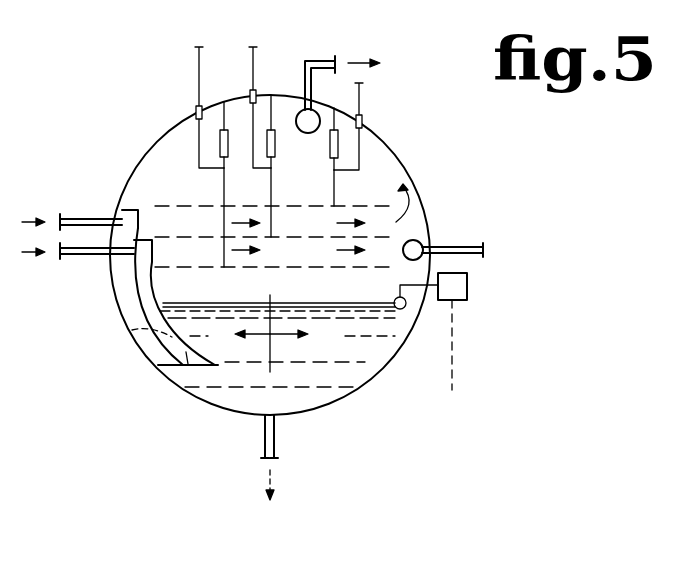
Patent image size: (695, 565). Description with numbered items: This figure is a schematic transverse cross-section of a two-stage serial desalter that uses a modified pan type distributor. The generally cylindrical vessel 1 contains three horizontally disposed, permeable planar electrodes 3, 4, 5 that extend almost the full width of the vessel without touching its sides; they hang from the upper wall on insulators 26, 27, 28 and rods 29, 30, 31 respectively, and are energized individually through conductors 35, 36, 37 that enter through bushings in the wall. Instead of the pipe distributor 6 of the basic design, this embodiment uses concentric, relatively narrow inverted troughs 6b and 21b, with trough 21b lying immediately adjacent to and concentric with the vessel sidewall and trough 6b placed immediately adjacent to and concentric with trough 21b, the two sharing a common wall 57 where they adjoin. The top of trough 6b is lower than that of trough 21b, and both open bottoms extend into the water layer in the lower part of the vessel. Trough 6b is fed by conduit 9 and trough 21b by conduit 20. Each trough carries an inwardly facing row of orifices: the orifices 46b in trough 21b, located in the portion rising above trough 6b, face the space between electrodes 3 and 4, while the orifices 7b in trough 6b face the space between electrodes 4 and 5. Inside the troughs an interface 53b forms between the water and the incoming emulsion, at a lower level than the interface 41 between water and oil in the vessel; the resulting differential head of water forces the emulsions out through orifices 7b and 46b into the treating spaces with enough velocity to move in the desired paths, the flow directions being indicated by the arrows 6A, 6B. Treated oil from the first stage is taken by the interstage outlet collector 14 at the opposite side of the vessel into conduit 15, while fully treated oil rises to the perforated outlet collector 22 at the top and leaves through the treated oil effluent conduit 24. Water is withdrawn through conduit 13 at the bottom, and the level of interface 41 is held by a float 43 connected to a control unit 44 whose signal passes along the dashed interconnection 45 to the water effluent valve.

The vessel 1 is at (408, 165).
The electrode 3 is at (318, 205).
The electrode 4 is at (320, 236).
The electrode 5 is at (322, 266).
The distributor 6 is at (268, 334).
The left flow direction 6A is at (239, 336).
The right flow direction 6B is at (305, 336).
The trough 6b is at (188, 365).
The orifices 7b is at (150, 251).
The conduit 9 is at (78, 257).
The conduit 13 is at (278, 440).
The interstage outlet collector 14 is at (420, 241).
The conduit 15 is at (474, 242).
The conduit 20 is at (82, 216).
The trough 21b is at (133, 310).
The outlet collector 22 is at (298, 110).
The treated oil effluent conduit 24 is at (320, 60).
The insulator 26 is at (332, 158).
The insulator 27 is at (277, 146).
The insulator 28 is at (229, 144).
The rod 29 is at (338, 190).
The rod 30 is at (270, 197).
The rod 31 is at (224, 197).
The conductor 35 is at (362, 93).
The conductor 36 is at (250, 72).
The conductor 37 is at (196, 72).
The interface 41 is at (322, 300).
The float 43 is at (402, 309).
The control unit 44 is at (469, 288).
The interconnection 45 is at (453, 345).
The orifices 46b is at (143, 222).
The interface 53b is at (130, 331).
The common wall 57 is at (185, 354).